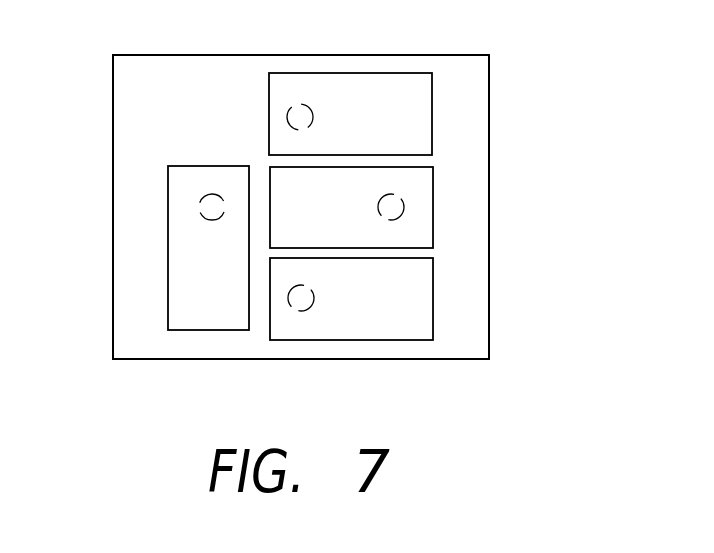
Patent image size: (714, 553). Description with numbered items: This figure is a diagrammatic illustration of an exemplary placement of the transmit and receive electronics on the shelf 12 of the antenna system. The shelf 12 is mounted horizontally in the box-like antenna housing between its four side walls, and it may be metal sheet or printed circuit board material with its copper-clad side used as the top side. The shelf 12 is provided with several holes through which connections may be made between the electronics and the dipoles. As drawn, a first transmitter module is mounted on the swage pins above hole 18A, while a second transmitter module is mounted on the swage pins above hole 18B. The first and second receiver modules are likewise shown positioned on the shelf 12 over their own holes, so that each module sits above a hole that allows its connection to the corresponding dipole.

The shelf 12 is at (492, 174).
The hole 18A is at (291, 107).
The hole 18B is at (199, 204).